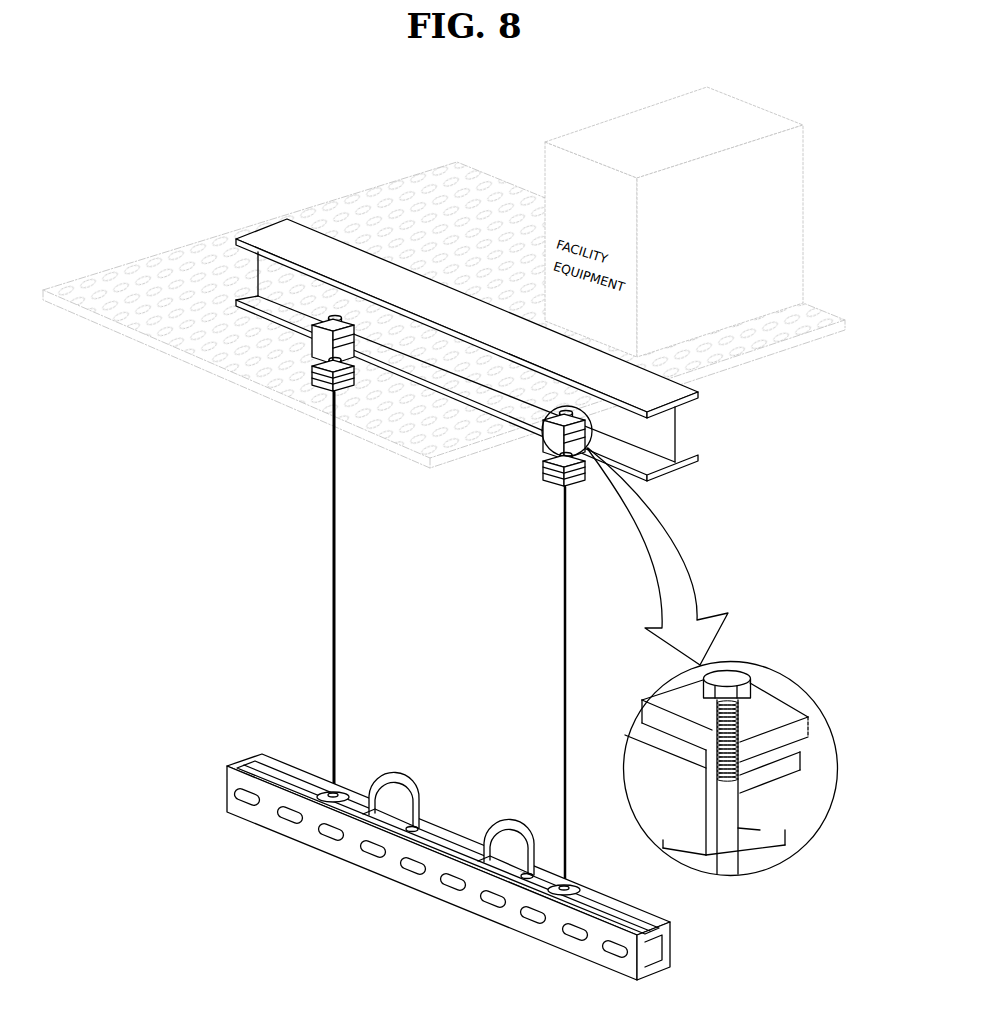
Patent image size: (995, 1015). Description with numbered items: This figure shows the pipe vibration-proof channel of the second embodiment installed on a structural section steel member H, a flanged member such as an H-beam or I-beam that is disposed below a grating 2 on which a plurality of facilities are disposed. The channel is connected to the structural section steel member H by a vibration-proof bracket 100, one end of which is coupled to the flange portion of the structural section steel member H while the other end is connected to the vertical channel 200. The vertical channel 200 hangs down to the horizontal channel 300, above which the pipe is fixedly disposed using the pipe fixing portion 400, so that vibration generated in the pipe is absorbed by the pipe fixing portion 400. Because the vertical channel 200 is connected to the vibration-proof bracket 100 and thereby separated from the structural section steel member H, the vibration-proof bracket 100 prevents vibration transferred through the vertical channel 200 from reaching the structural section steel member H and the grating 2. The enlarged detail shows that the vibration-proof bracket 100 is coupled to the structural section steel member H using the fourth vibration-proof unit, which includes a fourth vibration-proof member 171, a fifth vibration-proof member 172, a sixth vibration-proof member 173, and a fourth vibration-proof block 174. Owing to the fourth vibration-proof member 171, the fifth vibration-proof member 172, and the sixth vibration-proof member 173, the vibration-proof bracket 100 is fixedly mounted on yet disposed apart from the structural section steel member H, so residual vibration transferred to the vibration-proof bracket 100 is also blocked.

The grating 2 is at (830, 337).
The structural section steel member H is at (687, 452).
The vibration-proof bracket 100 is at (342, 402).
The vertical channel 200 is at (330, 493).
The horizontal channel 300 is at (243, 758).
The pipe fixing portion 400 is at (403, 762).
The fourth vibration-proof member 171 is at (740, 831).
The fifth vibration-proof member 172 is at (730, 798).
The sixth vibration-proof member 173 is at (806, 768).
The fourth vibration-proof block 174 is at (803, 762).